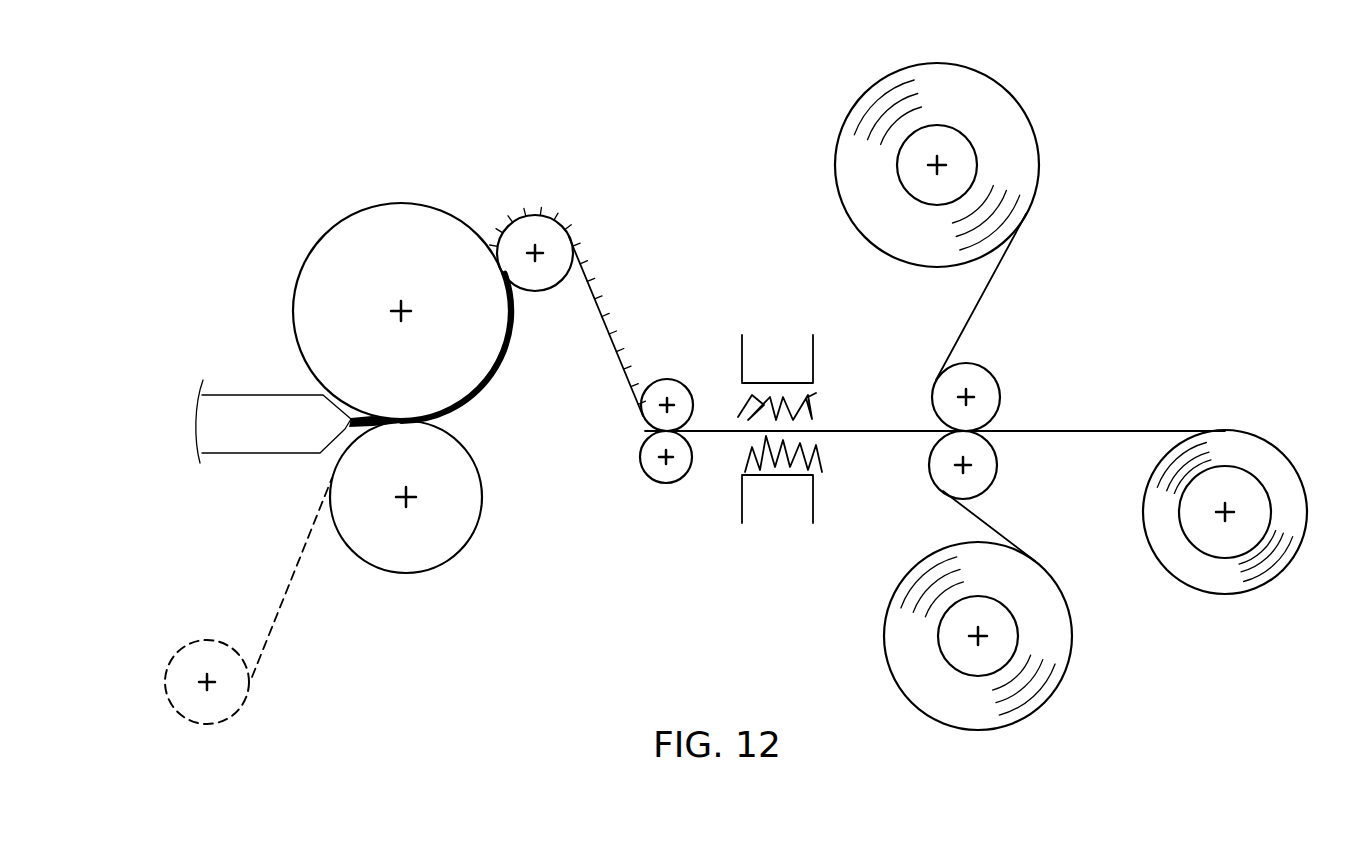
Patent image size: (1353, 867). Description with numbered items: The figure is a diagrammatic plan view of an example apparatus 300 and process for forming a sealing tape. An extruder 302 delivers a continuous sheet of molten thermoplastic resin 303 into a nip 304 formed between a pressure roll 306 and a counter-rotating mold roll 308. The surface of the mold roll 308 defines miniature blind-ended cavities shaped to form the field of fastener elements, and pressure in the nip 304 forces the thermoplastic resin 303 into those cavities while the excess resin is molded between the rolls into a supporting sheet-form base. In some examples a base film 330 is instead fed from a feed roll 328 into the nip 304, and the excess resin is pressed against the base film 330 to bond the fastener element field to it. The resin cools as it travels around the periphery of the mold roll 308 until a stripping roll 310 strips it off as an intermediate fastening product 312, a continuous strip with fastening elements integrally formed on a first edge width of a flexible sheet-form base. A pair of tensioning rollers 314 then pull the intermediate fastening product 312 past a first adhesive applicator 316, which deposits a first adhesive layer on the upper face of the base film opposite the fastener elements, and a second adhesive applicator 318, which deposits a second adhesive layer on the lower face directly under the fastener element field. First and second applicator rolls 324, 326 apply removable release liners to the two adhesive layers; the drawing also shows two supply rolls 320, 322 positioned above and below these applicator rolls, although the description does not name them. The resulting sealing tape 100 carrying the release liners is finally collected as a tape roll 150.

The sealing tape 100 is at (883, 397).
The tape roll 150 is at (1292, 470).
The apparatus 300 is at (282, 161).
The extruder 302 is at (248, 396).
The thermoplastic resin 303 is at (344, 432).
The nip 304 is at (464, 421).
The pressure roll 306 is at (458, 553).
The mold roll 308 is at (400, 203).
The stripping roll 310 is at (540, 292).
The intermediate fastening product 312 is at (630, 332).
The tensioning rollers 314 is at (656, 484).
The first adhesive applicator 316 is at (813, 346).
The second adhesive applicator 318 is at (813, 478).
The upper supply roll 320 is at (1026, 118).
The lower supply roll 322 is at (1072, 657).
The first applicator roll 324 is at (978, 364).
The second applicator roll 326 is at (997, 462).
The feed roll 328 is at (208, 640).
The base film 330 is at (272, 627).